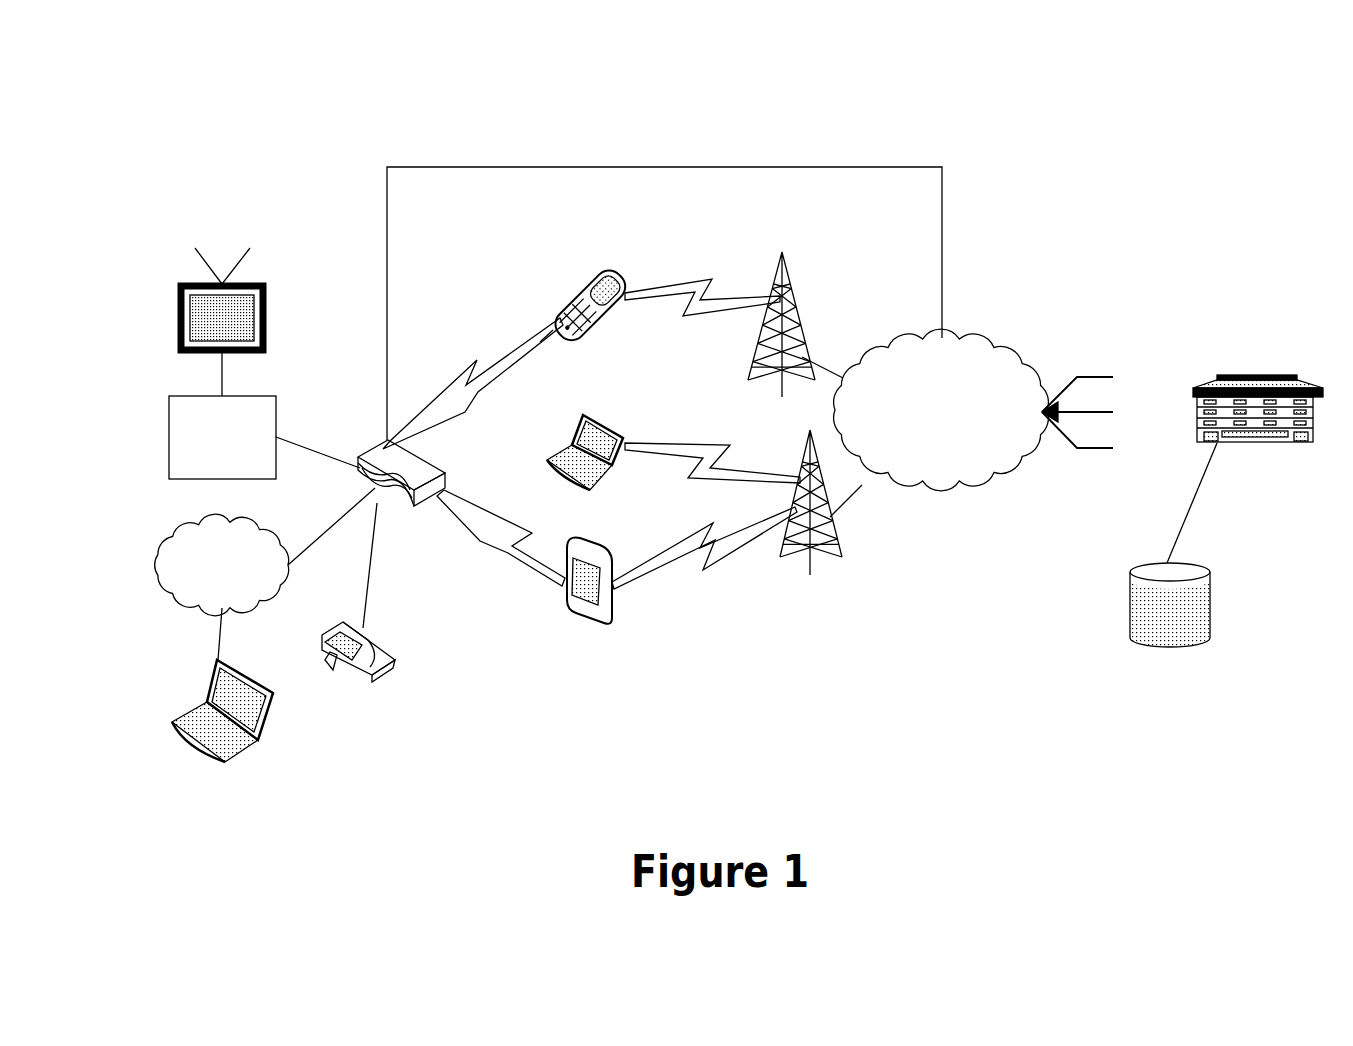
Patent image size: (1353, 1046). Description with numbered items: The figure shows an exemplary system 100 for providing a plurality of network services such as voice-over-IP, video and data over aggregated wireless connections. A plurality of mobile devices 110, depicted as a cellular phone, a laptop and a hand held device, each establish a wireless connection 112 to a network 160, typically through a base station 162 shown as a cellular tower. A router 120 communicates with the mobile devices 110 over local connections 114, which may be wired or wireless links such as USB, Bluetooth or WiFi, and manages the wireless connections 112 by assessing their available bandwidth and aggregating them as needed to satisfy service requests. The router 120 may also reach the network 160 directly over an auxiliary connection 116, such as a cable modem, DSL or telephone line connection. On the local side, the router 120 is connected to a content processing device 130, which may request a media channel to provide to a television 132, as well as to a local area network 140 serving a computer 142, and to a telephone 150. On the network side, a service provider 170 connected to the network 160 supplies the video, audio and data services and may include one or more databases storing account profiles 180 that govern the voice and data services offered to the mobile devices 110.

The system 100 is at (196, 103).
The mobile device 110 is at (585, 457).
The wireless connection 112 is at (704, 278).
The local connection 114 is at (487, 395).
The auxiliary connection 116 is at (658, 167).
The router 120 is at (401, 534).
The content processing device 130 is at (264, 416).
The television 132 is at (268, 290).
The local area network 140 is at (265, 574).
The computer 142 is at (222, 723).
The telephone 150 is at (357, 685).
The network 160 is at (1006, 410).
The base station 162 is at (788, 297).
The service provider 170 is at (1245, 469).
The account profiles 180 is at (1170, 639).